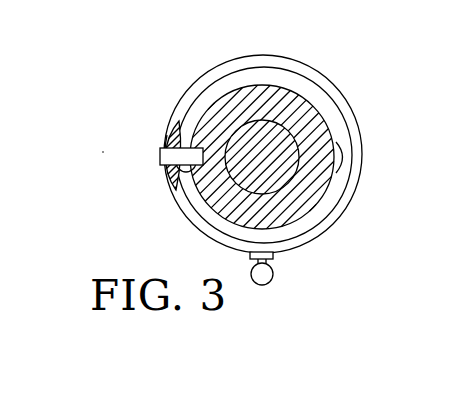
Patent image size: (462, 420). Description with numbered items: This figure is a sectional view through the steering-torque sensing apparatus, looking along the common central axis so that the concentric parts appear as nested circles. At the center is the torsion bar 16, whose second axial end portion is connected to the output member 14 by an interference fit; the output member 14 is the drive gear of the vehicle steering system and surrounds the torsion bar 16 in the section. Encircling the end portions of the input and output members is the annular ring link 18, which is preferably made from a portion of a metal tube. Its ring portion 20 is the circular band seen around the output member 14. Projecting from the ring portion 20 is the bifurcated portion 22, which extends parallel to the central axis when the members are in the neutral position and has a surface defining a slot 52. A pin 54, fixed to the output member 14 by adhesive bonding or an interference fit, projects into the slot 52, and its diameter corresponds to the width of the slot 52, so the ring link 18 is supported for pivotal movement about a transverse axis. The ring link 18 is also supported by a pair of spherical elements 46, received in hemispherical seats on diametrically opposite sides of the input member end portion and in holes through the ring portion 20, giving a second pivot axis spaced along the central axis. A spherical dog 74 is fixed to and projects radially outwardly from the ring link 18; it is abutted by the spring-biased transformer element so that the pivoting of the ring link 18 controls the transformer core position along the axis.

The output member 14 is at (259, 102).
The torsion bar 16 is at (271, 151).
The ring link 18 is at (198, 65).
The ring portion 20 is at (228, 74).
The projecting portion 22 is at (167, 139).
The spherical elements 46 is at (189, 137).
The slot 52 is at (162, 163).
The pin 54 is at (176, 157).
The spherical dog 74 is at (273, 277).